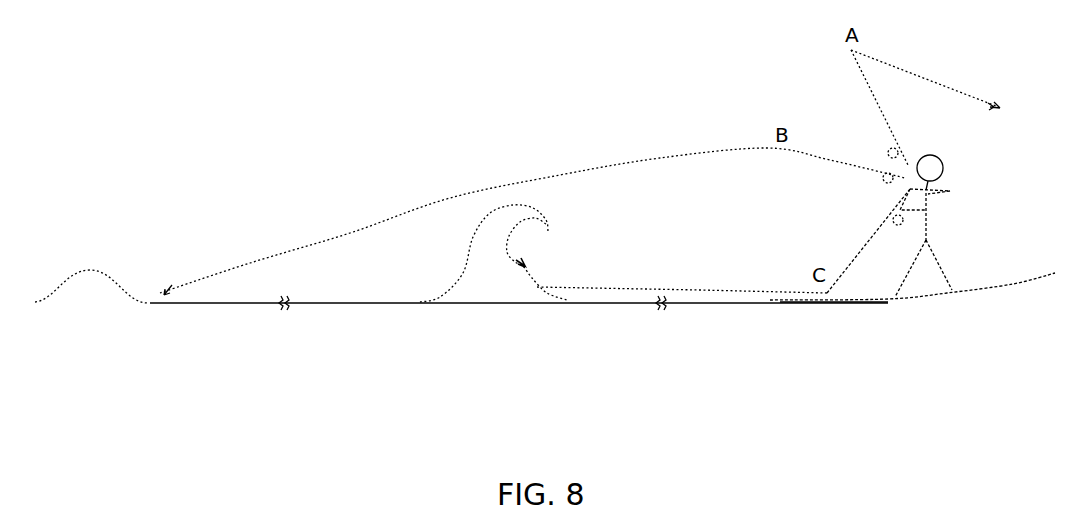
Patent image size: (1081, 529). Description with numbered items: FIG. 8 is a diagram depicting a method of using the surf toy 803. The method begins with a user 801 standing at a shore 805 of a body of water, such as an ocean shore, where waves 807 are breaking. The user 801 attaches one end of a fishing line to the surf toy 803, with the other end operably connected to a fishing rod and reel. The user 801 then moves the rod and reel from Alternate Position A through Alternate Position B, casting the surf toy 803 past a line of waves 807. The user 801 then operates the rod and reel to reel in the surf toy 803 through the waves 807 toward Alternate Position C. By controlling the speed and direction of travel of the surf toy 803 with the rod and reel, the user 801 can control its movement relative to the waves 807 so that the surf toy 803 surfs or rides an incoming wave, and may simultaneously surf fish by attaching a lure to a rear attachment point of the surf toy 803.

The user 801 is at (927, 195).
The surf toy 803 is at (523, 266).
The shore 805 is at (1017, 282).
The waves 807 is at (492, 282).